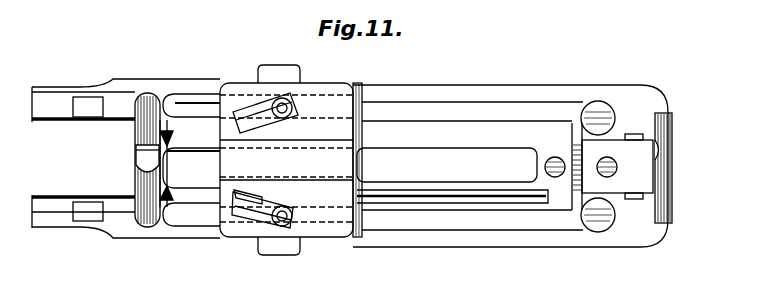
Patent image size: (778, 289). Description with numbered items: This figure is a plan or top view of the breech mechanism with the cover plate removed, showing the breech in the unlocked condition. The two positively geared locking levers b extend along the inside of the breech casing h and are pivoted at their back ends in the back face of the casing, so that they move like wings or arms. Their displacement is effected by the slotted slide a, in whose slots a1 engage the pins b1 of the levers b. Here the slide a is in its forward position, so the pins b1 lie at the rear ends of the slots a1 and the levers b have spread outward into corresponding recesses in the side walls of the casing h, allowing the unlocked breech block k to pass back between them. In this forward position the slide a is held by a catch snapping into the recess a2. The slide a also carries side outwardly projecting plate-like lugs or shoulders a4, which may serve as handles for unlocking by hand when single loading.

The slotted slide a is at (347, 162).
The slots a1 is at (240, 112).
The recess a2 is at (245, 188).
The plate-like lugs or shoulders a4 is at (277, 76).
The locking levers b is at (447, 105).
The pins b1 is at (287, 207).
The breech casing h is at (577, 77).
The breech block k is at (452, 175).